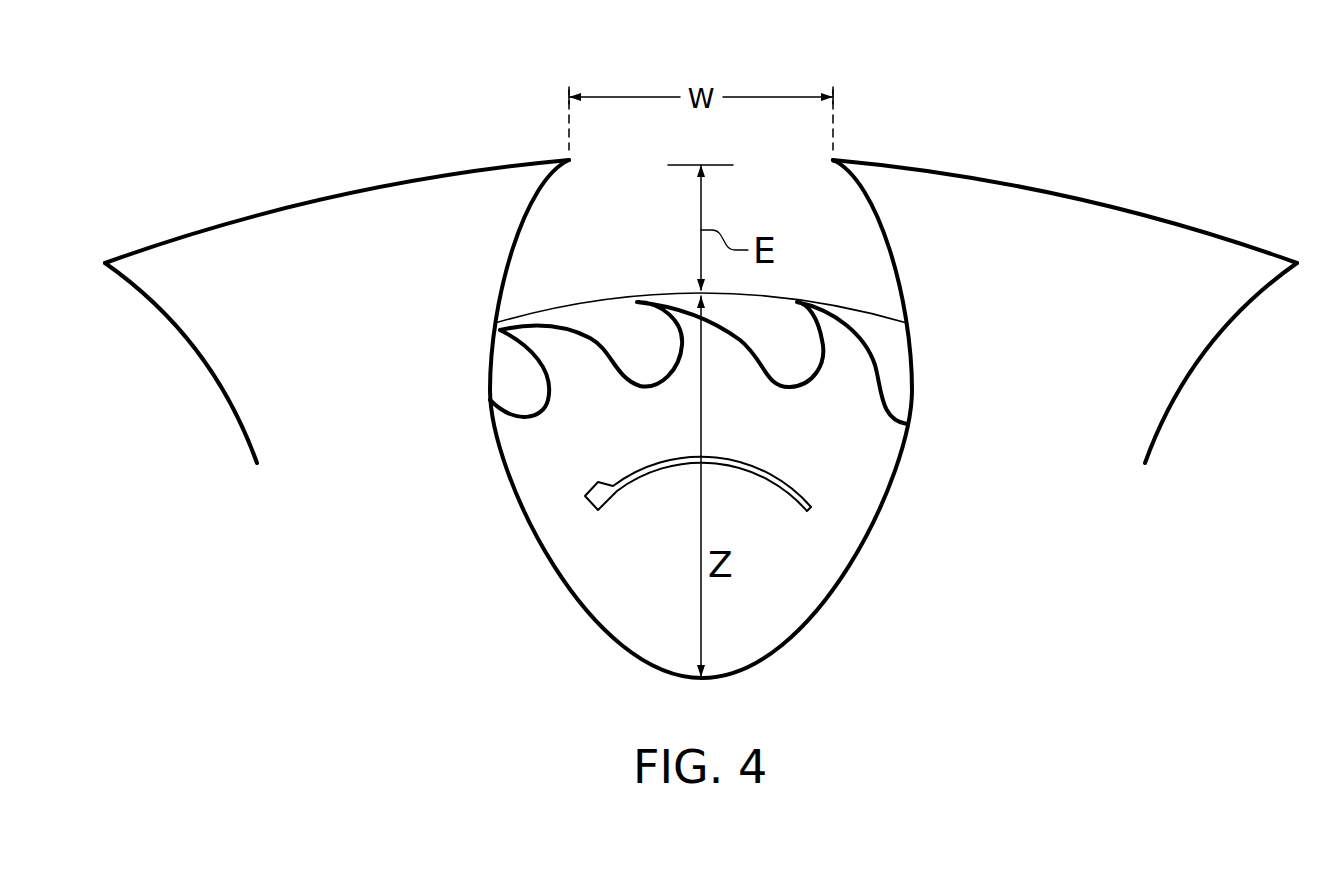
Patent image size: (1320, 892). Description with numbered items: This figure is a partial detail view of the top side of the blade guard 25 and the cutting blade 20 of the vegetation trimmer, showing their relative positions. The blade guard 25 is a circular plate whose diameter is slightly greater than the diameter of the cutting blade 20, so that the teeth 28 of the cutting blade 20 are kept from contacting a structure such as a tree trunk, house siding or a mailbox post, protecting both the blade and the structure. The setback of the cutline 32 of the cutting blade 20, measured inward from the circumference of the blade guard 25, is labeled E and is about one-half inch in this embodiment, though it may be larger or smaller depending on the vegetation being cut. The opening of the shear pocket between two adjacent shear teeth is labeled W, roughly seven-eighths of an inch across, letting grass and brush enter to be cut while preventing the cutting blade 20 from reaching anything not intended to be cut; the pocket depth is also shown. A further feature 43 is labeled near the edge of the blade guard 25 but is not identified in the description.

The cutting blade 20 is at (863, 483).
The blade guard 25 is at (1128, 336).
The teeth 28 is at (866, 378).
The cutline 32 is at (863, 310).
The groove edge 43 is at (837, 161).